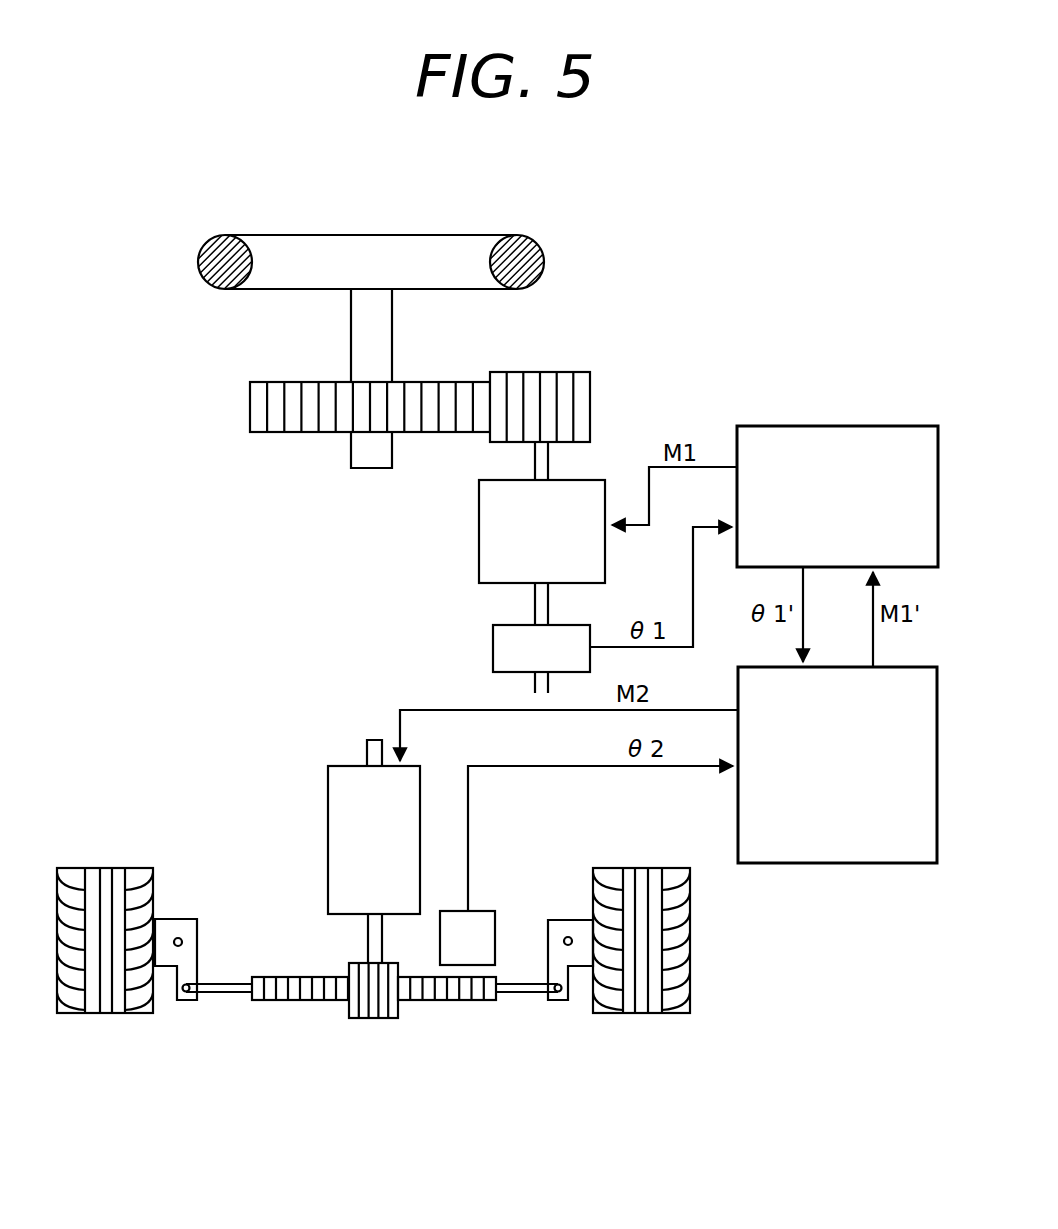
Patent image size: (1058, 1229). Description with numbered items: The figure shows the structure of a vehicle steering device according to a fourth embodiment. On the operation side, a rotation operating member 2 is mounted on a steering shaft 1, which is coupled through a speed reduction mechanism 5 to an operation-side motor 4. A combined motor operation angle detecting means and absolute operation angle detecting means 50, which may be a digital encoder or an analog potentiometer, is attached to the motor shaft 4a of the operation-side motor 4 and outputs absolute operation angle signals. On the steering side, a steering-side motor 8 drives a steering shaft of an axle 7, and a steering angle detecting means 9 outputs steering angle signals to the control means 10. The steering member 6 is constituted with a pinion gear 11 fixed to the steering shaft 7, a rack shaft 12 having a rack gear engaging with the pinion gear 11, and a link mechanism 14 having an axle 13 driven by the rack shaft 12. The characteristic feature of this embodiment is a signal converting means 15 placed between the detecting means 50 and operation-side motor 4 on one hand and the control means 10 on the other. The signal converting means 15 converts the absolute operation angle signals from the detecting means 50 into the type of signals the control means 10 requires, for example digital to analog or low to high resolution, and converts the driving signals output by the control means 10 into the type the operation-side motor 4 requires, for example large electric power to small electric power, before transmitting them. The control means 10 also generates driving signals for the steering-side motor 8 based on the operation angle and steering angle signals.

The steering shaft 1 is at (351, 335).
The rotation operating member 2 is at (455, 235).
The operation-side motor 4 is at (479, 513).
The motor shaft 4a is at (535, 603).
The speed reduction mechanism 5 is at (450, 382).
The combined motor operation angle detecting means and absolute operation angle dete 50 is at (493, 636).
The steering member 6 is at (373, 942).
The steering shaft of an axle 7 is at (368, 944).
The steering-side motor 8 is at (345, 766).
The steering angle detecting means 9 is at (478, 911).
The control means 10 is at (872, 863).
The pinion gear 11 is at (370, 1018).
The rack shaft 12 is at (307, 1000).
The axle 13 is at (165, 919).
The link mechanism 14 is at (187, 1000).
The signal converting means 15 is at (873, 426).